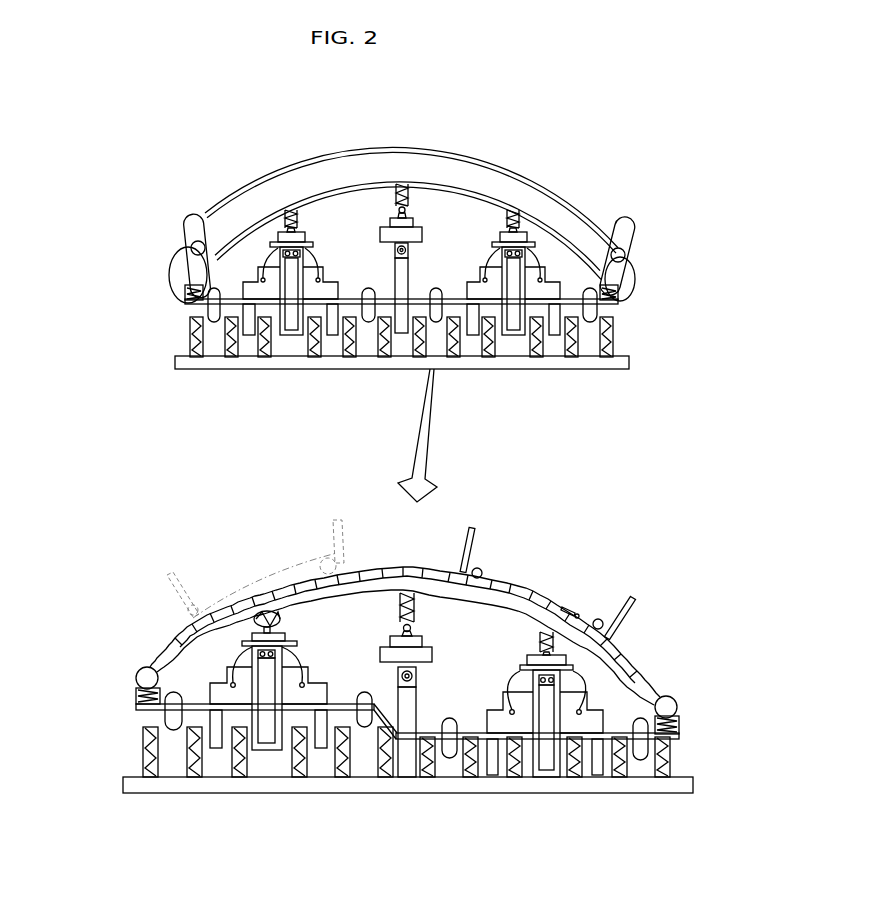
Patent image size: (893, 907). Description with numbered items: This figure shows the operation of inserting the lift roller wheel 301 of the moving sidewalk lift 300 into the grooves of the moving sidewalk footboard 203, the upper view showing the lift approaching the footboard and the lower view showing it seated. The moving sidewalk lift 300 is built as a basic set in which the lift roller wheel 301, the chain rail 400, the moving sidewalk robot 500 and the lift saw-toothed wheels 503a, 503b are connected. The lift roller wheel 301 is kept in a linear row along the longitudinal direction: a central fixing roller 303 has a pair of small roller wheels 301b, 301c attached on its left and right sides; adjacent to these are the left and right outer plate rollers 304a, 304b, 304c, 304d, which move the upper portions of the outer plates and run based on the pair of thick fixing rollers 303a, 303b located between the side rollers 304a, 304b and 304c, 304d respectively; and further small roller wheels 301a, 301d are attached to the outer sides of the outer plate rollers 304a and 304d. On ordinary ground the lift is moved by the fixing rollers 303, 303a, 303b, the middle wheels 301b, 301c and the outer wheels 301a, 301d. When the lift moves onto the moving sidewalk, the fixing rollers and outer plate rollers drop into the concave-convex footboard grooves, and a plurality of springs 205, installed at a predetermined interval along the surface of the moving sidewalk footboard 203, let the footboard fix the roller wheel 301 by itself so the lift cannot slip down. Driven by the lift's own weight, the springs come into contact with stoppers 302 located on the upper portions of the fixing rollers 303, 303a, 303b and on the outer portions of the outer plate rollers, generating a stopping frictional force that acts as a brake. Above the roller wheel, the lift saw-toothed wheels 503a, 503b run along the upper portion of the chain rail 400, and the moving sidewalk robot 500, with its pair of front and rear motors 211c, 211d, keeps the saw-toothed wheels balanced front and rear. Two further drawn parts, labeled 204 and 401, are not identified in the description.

The moving sidewalk footboard 203 is at (543, 369).
The elastic member (spring) 204 is at (186, 292).
The springs 205 is at (146, 778).
The front motor 211c is at (197, 247).
The rear motor 211d is at (622, 254).
The moving sidewalk lift 300 is at (436, 580).
The lift roller wheel 301 is at (368, 323).
The small roller wheel 301a is at (173, 732).
The small roller wheel 301b is at (365, 729).
The small roller wheel 301c is at (450, 759).
The small roller wheel 301d is at (641, 761).
The stopper 302 is at (396, 251).
The fixing roller 303 is at (406, 761).
The fixing roller 303a is at (265, 751).
The fixing roller 303b is at (546, 766).
The outer plate roller 304a is at (215, 749).
The outer plate roller 304b is at (320, 749).
The outer plate roller 304c is at (492, 766).
The outer plate roller 304d is at (597, 766).
The chain rail 400 is at (468, 186).
The support arm 401 is at (203, 222).
The moving sidewalk robot 500 is at (574, 608).
The lift saw-toothed wheel 503a is at (480, 568).
The lift saw-toothed wheel 503b is at (637, 610).